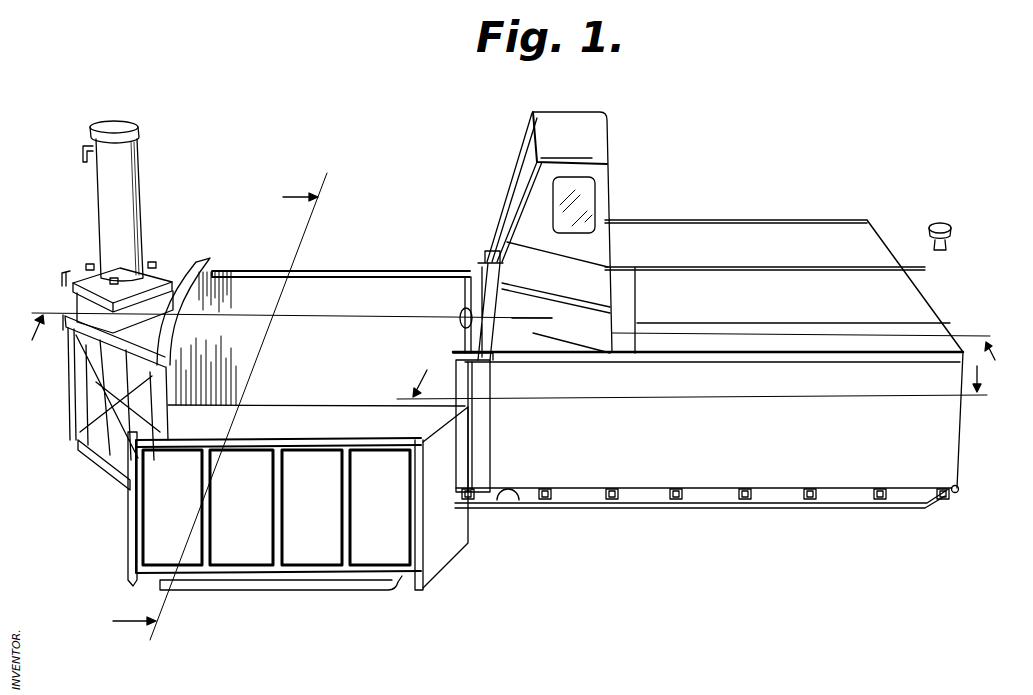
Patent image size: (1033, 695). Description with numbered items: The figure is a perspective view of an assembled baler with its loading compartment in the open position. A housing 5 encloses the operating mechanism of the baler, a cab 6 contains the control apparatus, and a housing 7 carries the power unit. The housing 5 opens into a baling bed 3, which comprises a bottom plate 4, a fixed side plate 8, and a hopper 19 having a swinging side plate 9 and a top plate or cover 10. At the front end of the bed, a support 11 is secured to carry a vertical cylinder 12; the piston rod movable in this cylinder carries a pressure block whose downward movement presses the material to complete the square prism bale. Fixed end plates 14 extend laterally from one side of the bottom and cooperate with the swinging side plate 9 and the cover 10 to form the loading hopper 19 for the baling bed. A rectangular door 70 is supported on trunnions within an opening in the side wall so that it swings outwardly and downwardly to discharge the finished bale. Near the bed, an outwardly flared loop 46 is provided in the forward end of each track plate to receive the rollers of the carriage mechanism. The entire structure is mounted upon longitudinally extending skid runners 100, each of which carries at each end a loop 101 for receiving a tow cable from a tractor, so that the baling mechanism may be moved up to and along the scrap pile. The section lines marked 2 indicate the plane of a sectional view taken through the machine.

The vertical cylinder 12 is at (140, 172).
The support 11 is at (180, 257).
The rectangular door 70 is at (90, 413).
The bottom plate 4 is at (127, 483).
The fixed end plates 14 is at (128, 536).
The top plate or cover 10 is at (310, 552).
The hopper 19 is at (241, 507).
The swinging side plate 9 is at (396, 590).
The fixed side plate 8 is at (408, 270).
The housing 7 is at (223, 408).
The baling bed 3 is at (677, 320).
The section line 2- 2 is at (510, 329).
The cab 6 is at (612, 182).
The housing 5 is at (773, 477).
The outwardly flared loop 46 is at (515, 497).
The skid runners 100 is at (845, 510).
The loop 101 is at (957, 494).